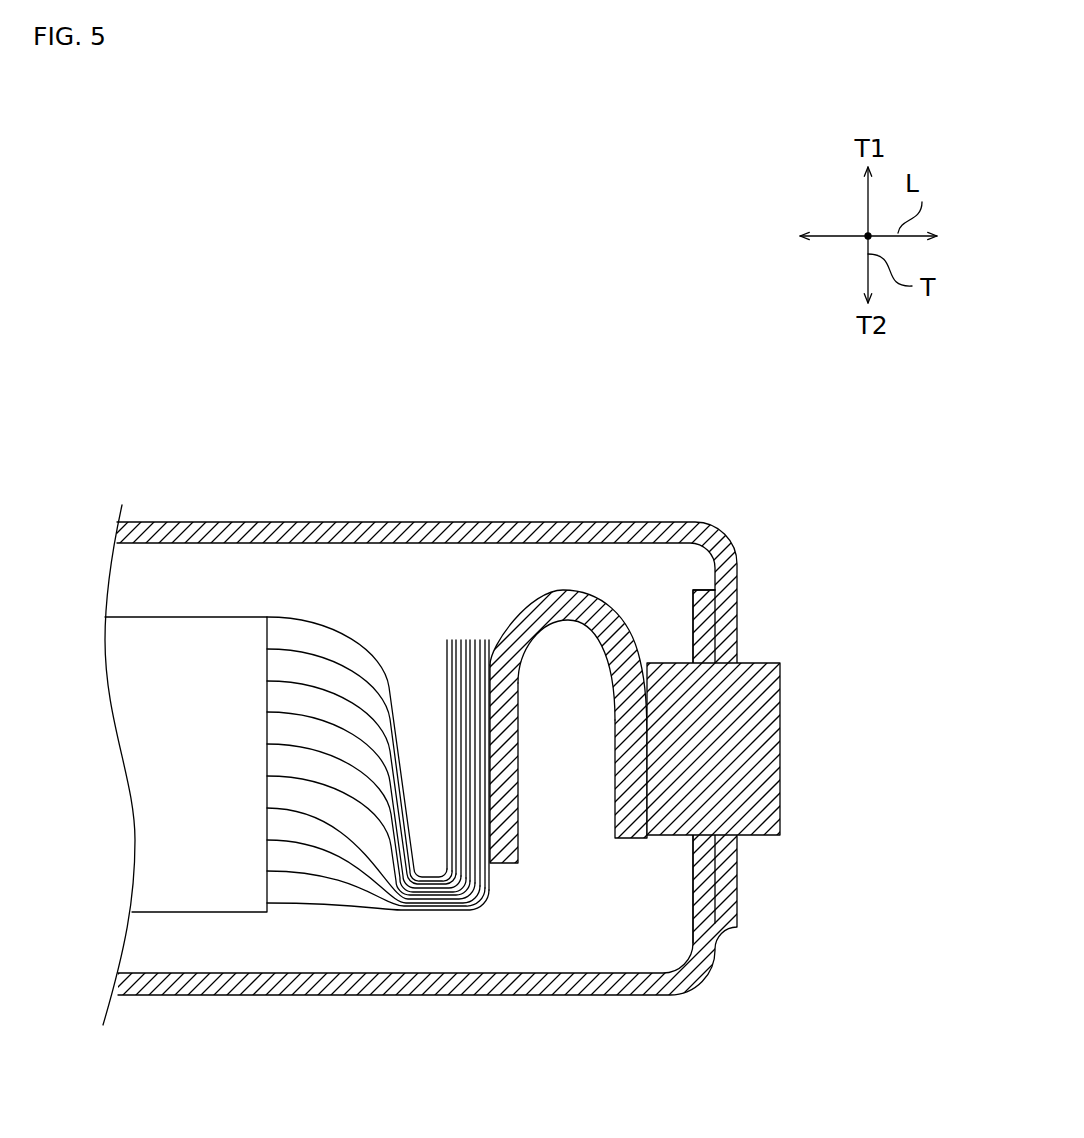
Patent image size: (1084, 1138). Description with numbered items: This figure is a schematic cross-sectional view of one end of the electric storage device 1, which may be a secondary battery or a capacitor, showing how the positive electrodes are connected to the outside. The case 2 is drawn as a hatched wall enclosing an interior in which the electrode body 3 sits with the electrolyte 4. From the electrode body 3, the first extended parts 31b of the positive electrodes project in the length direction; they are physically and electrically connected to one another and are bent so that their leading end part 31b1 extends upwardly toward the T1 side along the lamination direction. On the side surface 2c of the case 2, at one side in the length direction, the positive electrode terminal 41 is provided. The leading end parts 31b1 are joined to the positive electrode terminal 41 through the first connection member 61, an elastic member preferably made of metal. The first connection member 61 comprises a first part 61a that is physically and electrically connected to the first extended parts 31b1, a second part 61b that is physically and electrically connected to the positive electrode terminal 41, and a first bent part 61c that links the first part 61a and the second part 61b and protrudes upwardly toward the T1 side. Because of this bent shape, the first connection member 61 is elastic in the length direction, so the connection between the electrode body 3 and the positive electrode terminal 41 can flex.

The electric storage device 1 is at (737, 430).
The case 2 is at (740, 897).
The side surface 2c is at (738, 576).
The electrode body 3 is at (215, 916).
The electrolyte 4 is at (197, 565).
The first extended part 31b is at (300, 610).
The leading end part 31b1 is at (445, 672).
The positive electrode terminal 41 is at (782, 740).
The first connection member 61 is at (630, 622).
The first part 61a is at (503, 866).
The second part 61b is at (633, 840).
The first bent part 61c is at (567, 600).